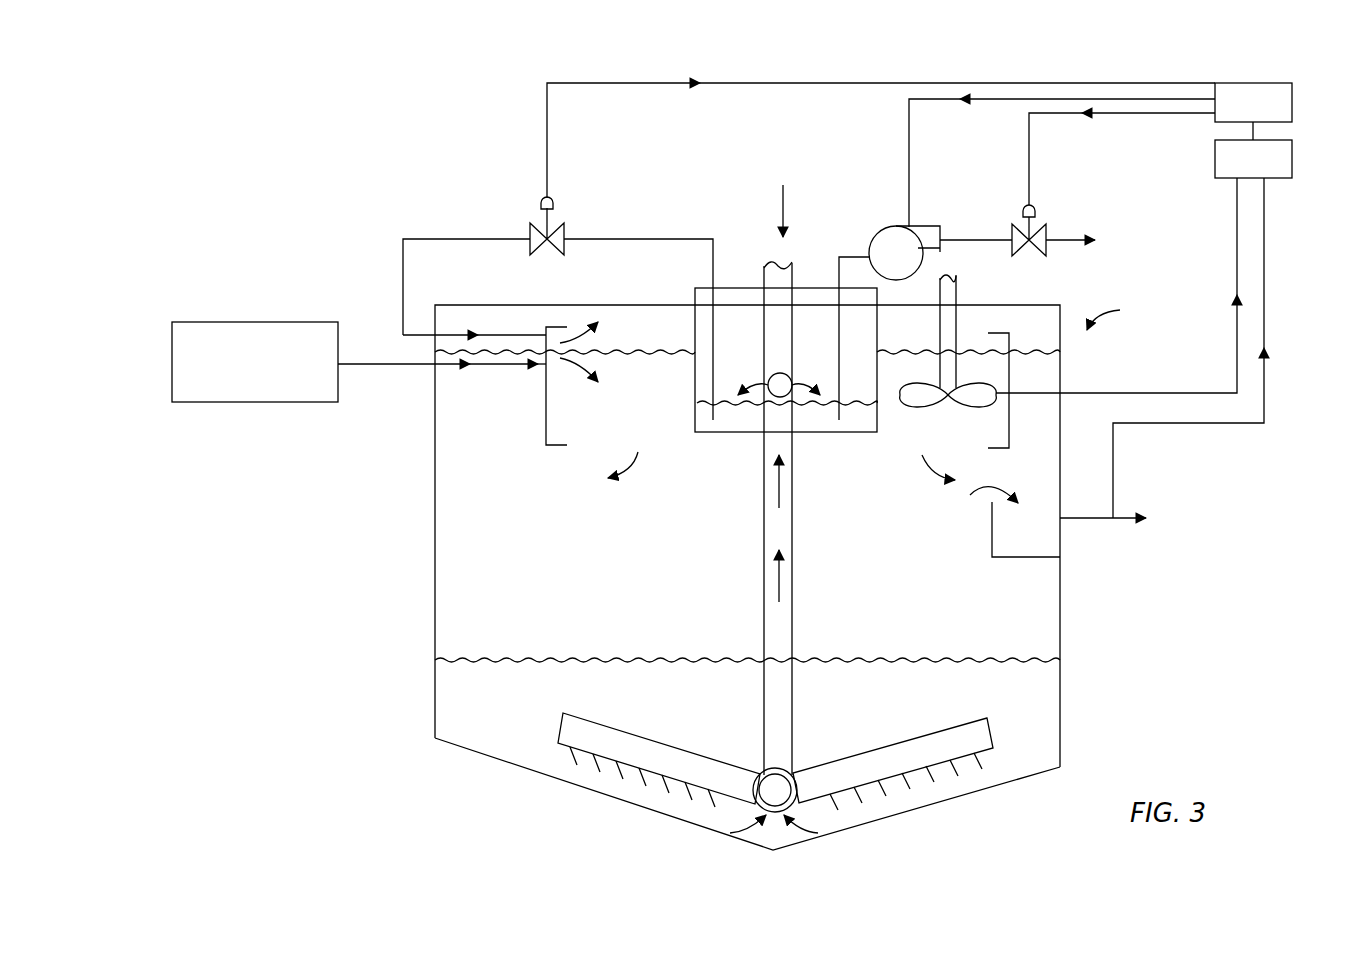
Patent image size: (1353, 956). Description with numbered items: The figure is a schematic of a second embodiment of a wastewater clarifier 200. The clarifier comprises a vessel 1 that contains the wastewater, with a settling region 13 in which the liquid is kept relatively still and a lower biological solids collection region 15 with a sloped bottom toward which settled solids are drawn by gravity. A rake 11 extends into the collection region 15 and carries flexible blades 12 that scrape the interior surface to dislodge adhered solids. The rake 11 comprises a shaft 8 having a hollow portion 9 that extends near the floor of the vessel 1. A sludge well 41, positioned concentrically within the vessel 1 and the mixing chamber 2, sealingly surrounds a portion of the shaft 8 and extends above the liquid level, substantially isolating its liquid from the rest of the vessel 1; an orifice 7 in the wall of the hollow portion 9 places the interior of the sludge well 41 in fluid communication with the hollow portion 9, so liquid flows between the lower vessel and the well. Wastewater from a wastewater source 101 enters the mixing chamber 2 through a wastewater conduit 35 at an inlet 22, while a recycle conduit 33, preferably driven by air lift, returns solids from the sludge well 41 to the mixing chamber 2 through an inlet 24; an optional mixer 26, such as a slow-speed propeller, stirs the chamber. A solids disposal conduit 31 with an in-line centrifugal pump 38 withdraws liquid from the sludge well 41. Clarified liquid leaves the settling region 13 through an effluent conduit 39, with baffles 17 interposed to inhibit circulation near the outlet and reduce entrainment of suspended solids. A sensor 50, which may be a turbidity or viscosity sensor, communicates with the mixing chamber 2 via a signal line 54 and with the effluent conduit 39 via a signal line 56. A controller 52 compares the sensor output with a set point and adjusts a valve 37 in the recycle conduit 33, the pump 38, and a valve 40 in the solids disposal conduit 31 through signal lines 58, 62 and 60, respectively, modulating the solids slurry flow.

The vessel 1 is at (1062, 646).
The mixing chamber 2 is at (627, 441).
The orifice 7 is at (788, 378).
The shaft 8 is at (793, 522).
The hollow portion 9 is at (783, 618).
The rake 11 is at (783, 195).
The flexible blades 12 is at (568, 760).
The settling region 13 is at (580, 623).
The biological solids collection region 15 is at (948, 693).
The baffles 17 is at (1028, 558).
The inlet 22 is at (568, 362).
The inlet 24 is at (568, 343).
The mixer 26 is at (962, 292).
The solids disposal conduit 31 is at (962, 238).
The recycle conduit 33 is at (452, 238).
The wastewater conduit 35 is at (403, 366).
The valve 37 is at (530, 229).
The pump 38 is at (878, 232).
The effluent conduit 39 is at (1088, 519).
The valve 40 is at (1047, 232).
The sludge well 41 is at (732, 432).
The sensor 50 is at (1253, 102).
The controller 52 is at (1253, 150).
The signal line 54 is at (1236, 378).
The signal line 56 is at (1264, 262).
The signal line 58 is at (598, 82).
The signal line 60 is at (1029, 152).
The signal line 62 is at (909, 134).
The wastewater source 101 is at (255, 362).
The wastewater clarifier 200 is at (1128, 313).